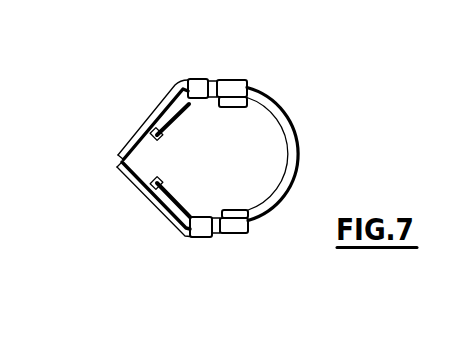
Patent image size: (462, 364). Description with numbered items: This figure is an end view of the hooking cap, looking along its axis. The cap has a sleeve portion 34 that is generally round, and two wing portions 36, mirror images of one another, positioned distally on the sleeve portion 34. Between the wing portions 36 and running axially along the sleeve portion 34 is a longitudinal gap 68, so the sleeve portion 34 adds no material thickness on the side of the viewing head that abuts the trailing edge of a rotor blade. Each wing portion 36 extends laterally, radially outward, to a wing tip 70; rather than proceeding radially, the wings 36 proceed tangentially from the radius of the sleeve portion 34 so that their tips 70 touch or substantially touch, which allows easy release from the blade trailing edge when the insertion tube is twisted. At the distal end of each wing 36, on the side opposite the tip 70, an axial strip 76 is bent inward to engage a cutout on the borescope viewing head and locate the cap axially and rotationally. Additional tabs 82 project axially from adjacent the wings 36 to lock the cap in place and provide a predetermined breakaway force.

The sleeve portion 34 is at (299, 130).
The wing portions 36 is at (160, 107).
The longitudinal gap 68 is at (160, 157).
The wing tip 70 is at (118, 158).
The axial strip 76 is at (202, 80).
The tabs 82 is at (233, 87).